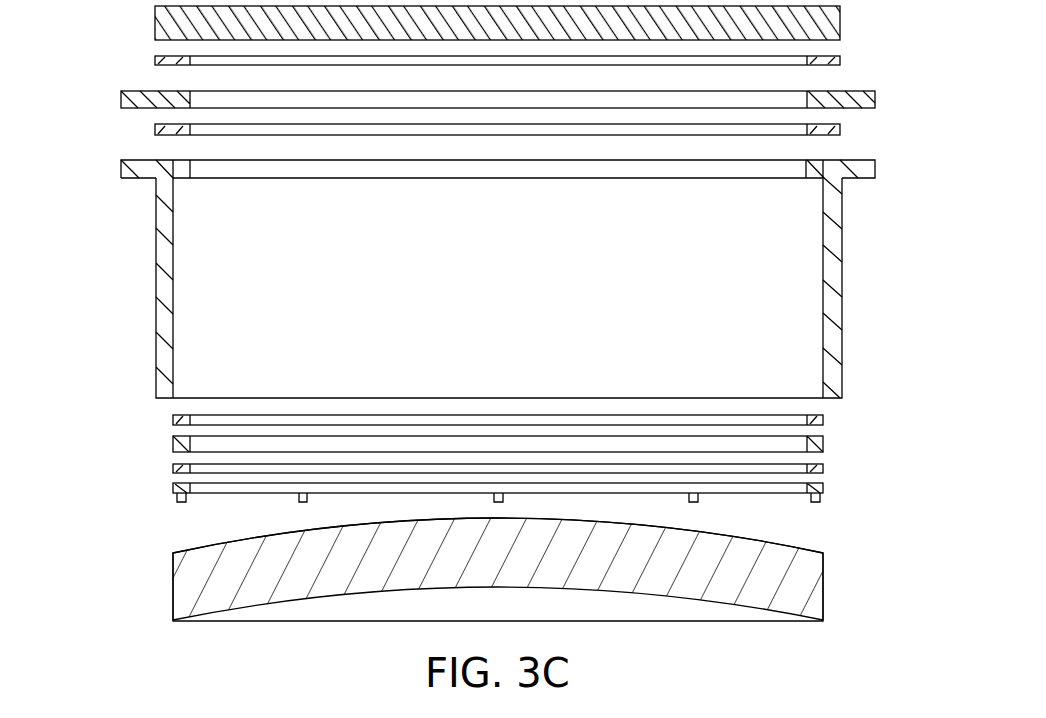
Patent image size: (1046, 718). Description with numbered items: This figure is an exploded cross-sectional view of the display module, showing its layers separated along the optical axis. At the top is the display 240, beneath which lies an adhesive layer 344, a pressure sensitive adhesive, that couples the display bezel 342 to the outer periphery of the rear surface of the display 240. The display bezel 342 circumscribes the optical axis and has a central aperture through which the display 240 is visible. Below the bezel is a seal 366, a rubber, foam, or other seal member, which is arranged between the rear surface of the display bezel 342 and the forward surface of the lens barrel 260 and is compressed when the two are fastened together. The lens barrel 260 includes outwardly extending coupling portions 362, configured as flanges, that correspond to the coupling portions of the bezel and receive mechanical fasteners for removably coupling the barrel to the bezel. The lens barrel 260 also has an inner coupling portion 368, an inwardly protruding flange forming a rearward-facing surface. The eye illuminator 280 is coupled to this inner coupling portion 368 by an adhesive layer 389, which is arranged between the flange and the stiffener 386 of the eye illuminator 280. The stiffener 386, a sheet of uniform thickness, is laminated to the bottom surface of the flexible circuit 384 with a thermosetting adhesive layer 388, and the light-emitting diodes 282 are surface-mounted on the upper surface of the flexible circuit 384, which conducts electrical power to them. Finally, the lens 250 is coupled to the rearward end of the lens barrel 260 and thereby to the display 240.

The display 240 is at (840, 22).
The adhesive layer 344 is at (840, 60).
The display bezel 342 is at (875, 98).
The seal 366 is at (840, 129).
The coupling portions 362 is at (122, 161).
The inner coupling portion 368 is at (191, 179).
The lens barrel 260 is at (505, 279).
The eye illuminator 280 is at (562, 446).
The adhesive layer 389 is at (823, 418).
The stiffener 386 is at (823, 442).
The adhesive layer 388 is at (823, 468).
The flexible circuit 384 is at (823, 487).
The light-emitting diodes 282 is at (822, 498).
The lens 250 is at (823, 590).